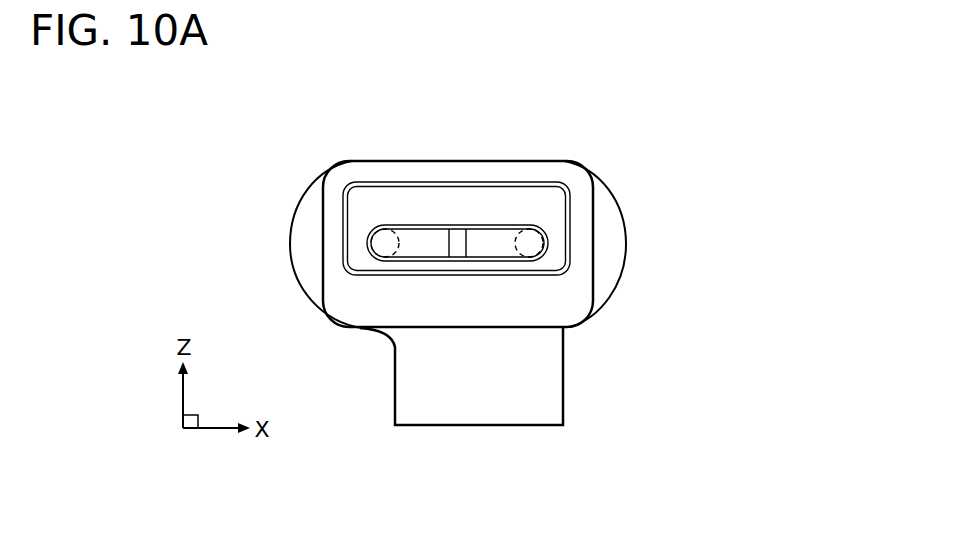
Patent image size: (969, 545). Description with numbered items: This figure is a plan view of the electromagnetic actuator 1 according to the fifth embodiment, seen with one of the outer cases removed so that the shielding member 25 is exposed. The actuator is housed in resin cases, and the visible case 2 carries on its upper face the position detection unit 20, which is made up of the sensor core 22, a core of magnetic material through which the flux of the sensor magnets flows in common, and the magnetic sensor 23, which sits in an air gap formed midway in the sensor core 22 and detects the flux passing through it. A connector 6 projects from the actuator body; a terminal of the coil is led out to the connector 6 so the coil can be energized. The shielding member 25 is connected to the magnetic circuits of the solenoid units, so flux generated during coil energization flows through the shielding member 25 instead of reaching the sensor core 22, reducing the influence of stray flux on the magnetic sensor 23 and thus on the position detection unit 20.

The electromagnetic actuator 1 is at (486, 244).
The case 2 is at (627, 248).
The connector 6 is at (542, 386).
The position detection unit 20 is at (423, 208).
The sensor core 22 is at (502, 240).
The magnetic sensor 23 is at (457, 240).
The shielding member 25 is at (377, 208).